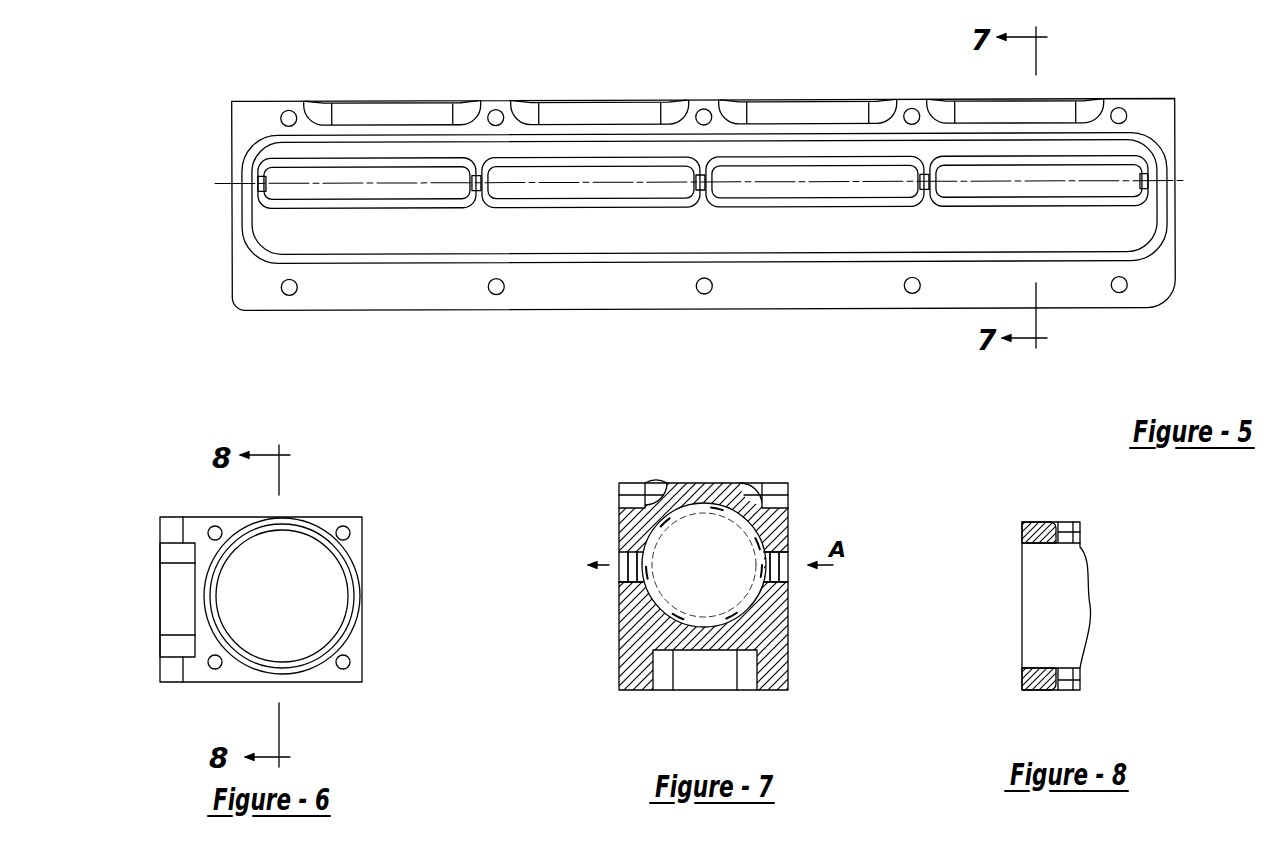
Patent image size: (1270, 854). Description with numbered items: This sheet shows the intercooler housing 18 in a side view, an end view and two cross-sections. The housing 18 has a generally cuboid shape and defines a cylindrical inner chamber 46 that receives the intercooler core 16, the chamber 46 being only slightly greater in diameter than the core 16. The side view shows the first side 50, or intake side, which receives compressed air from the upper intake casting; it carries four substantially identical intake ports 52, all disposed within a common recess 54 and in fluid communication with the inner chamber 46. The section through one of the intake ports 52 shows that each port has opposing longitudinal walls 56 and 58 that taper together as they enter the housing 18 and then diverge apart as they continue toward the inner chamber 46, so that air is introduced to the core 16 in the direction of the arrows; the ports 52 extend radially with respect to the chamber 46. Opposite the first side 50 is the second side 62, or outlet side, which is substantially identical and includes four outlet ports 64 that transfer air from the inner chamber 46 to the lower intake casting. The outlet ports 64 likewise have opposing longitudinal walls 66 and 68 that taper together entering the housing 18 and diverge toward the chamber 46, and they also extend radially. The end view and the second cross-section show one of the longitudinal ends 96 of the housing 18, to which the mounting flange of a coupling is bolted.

In FIG. 5, the intercooler housing 18 is at (697, 199).
In FIG. 6, the intercooler housing 18 is at (295, 575).
In FIG. 7, the intercooler housing 18 is at (729, 567).
In FIG. 8, the intercooler housing 18 is at (1026, 512).
In FIG. 5, the first side 50 is at (1158, 293).
In FIG. 7, the first side 50 is at (795, 676).
In FIG. 5, the intake ports 52 is at (391, 193).
In FIG. 5, the common recess 54 is at (286, 243).
In FIG. 6, the cylindrical inner chamber 46 is at (327, 587).
In FIG. 7, the cylindrical inner chamber 46 is at (728, 587).
In FIG. 6, the longitudinal ends 96 is at (353, 635).
In FIG. 7, the intercooler core 16 is at (745, 542).
In FIG. 7, the longitudinal wall 56 is at (785, 550).
In FIG. 7, the longitudinal wall 58 is at (790, 582).
In FIG. 7, the second side 62 is at (614, 677).
In FIG. 7, the outlet ports 64 is at (632, 563).
In FIG. 7, the longitudinal wall 66 is at (627, 563).
In FIG. 7, the longitudinal wall 68 is at (618, 583).